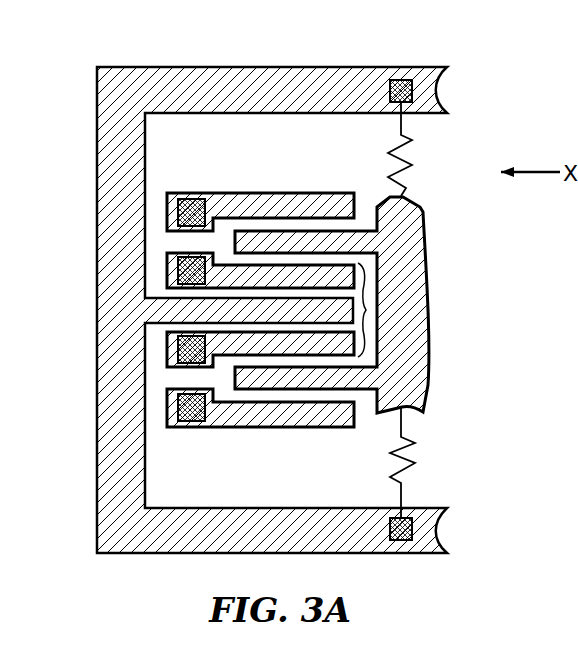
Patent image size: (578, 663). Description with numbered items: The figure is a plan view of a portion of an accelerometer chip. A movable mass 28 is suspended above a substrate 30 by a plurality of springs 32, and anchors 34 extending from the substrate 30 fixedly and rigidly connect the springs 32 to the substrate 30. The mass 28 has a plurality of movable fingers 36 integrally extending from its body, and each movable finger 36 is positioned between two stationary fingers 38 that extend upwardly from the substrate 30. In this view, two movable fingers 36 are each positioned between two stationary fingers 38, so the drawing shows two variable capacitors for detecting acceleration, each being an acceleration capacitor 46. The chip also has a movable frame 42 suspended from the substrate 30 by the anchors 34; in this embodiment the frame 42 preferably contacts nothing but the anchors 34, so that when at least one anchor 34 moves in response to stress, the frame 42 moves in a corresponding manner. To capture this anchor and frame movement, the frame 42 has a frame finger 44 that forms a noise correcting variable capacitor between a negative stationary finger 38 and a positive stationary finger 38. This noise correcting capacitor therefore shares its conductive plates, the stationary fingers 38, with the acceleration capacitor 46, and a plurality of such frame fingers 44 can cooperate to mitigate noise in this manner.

The movable mass 28 is at (408, 228).
The substrate 30 is at (286, 483).
The springs 32 is at (432, 150).
The anchors 34 is at (405, 79).
The movable fingers 36 is at (367, 226).
The stationary fingers 38 is at (224, 254).
The movable frame 42 is at (214, 78).
The frame finger 44 is at (347, 313).
The acceleration capacitor 46 is at (366, 310).